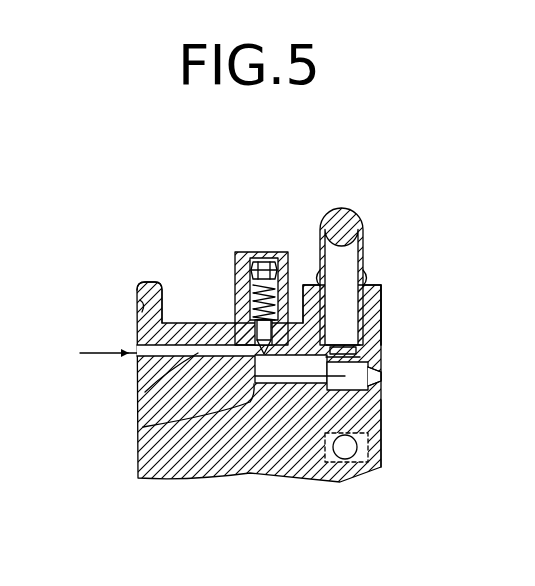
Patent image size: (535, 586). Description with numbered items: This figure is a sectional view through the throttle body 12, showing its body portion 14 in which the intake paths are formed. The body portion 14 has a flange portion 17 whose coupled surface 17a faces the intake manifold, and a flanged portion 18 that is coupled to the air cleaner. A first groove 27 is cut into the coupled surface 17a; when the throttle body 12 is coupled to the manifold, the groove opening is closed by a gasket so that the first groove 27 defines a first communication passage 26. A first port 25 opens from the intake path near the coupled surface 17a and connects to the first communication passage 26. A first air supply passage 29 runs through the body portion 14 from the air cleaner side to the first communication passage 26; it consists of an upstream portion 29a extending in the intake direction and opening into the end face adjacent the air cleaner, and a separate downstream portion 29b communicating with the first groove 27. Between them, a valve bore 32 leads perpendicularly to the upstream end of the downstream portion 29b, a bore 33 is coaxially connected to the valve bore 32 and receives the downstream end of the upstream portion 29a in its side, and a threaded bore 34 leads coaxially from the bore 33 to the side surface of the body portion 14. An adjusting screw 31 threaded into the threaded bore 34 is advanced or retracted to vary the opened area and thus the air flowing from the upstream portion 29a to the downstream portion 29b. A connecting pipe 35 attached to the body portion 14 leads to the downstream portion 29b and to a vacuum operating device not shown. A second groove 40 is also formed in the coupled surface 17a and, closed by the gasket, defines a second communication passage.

The throttle body 12 is at (130, 462).
The body portion 14 is at (243, 462).
The flange portion 17 is at (384, 289).
The coupled surface 17a is at (382, 468).
The flanged portion 18 is at (138, 281).
The first port 25 is at (350, 447).
The first communication passage 26 is at (378, 367).
The first groove 27 is at (370, 374).
The first air supply passage 29 is at (63, 377).
The upstream portion 29a is at (138, 392).
The downstream portion 29b is at (138, 428).
The adjusting screw 31 is at (236, 252).
The valve bore 32 is at (336, 347).
The bore 33 is at (294, 303).
The threaded bore 34 is at (254, 262).
The connecting pipe 35 is at (352, 214).
The second groove 40 is at (376, 316).